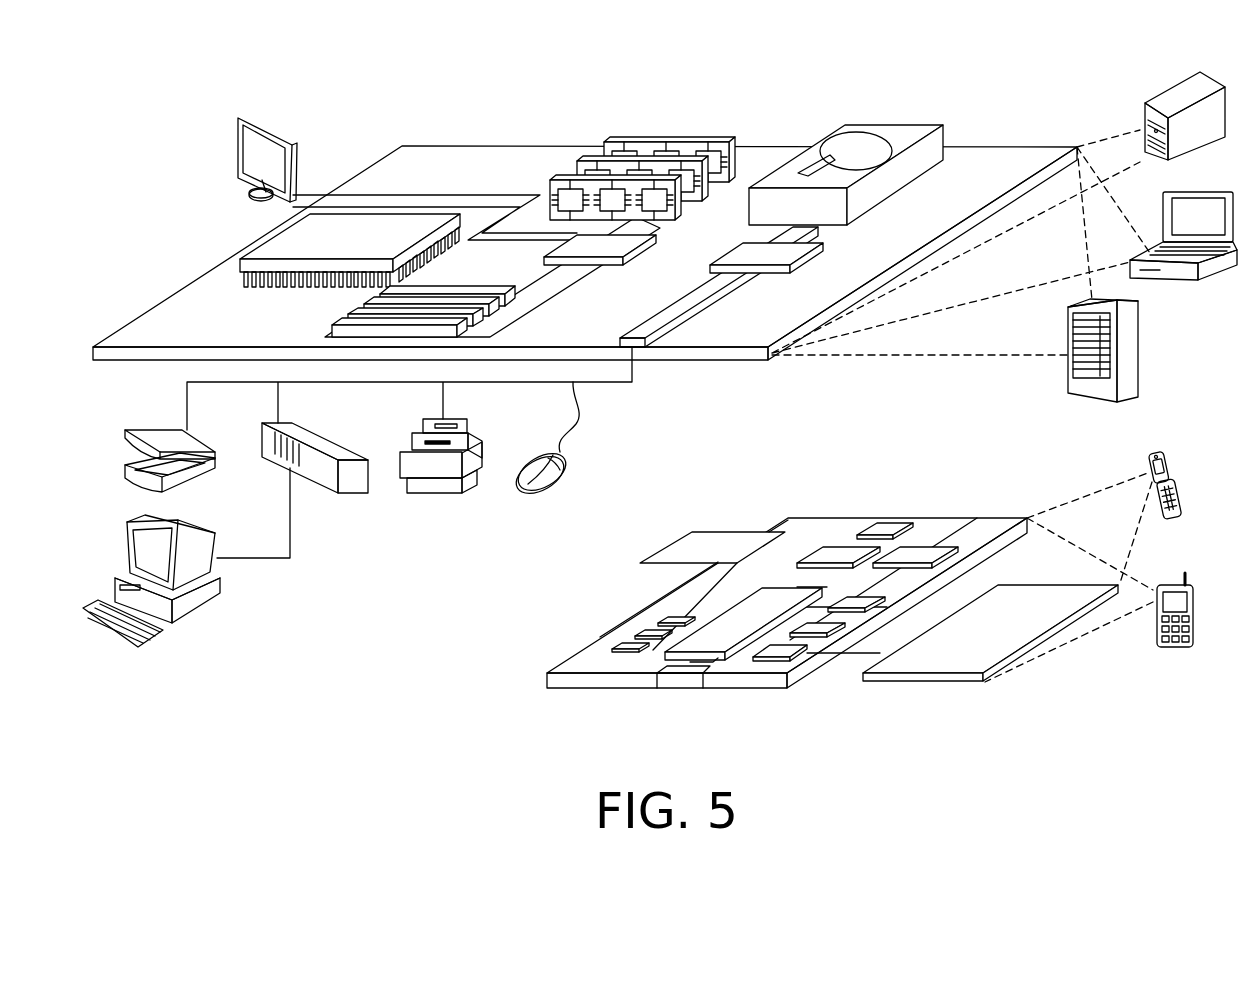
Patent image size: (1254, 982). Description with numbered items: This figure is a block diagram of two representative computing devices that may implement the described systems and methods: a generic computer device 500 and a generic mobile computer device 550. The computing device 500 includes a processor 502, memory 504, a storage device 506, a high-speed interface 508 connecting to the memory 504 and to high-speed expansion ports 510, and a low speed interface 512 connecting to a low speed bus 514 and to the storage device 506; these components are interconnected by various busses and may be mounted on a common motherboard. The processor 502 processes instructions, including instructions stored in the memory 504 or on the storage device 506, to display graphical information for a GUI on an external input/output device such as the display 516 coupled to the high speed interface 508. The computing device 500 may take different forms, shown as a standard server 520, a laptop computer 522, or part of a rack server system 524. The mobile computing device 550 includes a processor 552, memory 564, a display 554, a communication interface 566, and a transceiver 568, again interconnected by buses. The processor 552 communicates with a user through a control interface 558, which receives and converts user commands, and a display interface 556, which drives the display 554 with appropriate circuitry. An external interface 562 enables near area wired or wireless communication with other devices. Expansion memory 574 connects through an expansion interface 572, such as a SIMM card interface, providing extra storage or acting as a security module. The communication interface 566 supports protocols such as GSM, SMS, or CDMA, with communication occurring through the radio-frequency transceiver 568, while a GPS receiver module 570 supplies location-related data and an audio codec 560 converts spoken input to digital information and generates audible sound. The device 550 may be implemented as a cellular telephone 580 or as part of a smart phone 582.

The computing device 500 is at (357, 92).
The processor 502 is at (264, 242).
The memory 504 is at (671, 141).
The storage device 506 is at (885, 124).
The high-speed interface 508 is at (610, 244).
The high-speed expansion ports 510 is at (353, 309).
The low speed interface 512 is at (742, 251).
The low speed bus 514 is at (640, 333).
The display 516 is at (244, 118).
The standard server 520 is at (1165, 98).
The laptop computer 522 is at (1213, 190).
The rack server system 524 is at (1140, 348).
The mobile computer device 550 is at (500, 701).
The processor 552 is at (718, 623).
The display 554 is at (1027, 598).
The display interface 556 is at (800, 648).
The control interface 558 is at (823, 625).
The audio codec 560 is at (857, 598).
The external interface 562 is at (680, 677).
The memory 564 is at (637, 633).
The communication interface 566 is at (838, 548).
The transceiver 568 is at (922, 548).
The GPS receiver module 570 is at (884, 522).
The expansion interface 572 is at (770, 530).
The expansion memory 574 is at (692, 530).
The cellular telephone 580 is at (1158, 450).
The smart phone 582 is at (1172, 585).